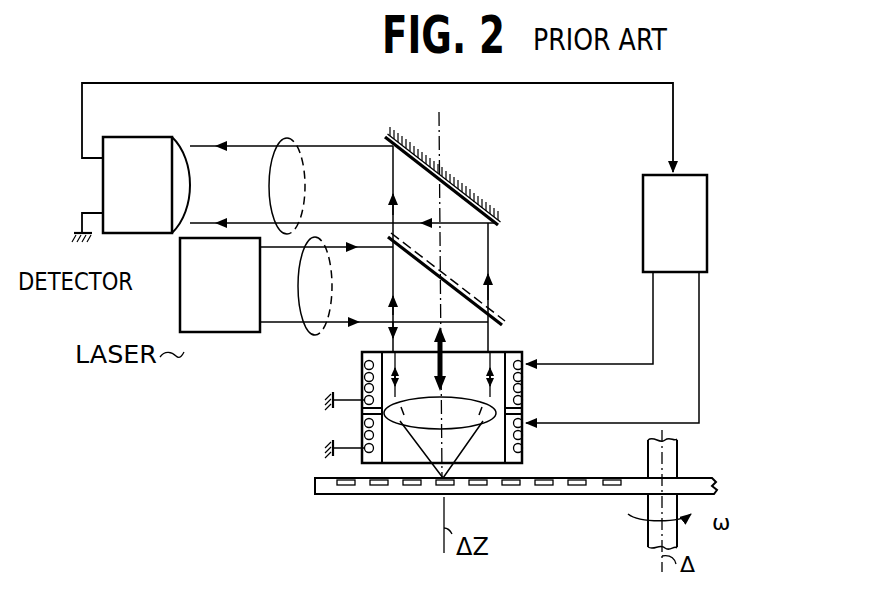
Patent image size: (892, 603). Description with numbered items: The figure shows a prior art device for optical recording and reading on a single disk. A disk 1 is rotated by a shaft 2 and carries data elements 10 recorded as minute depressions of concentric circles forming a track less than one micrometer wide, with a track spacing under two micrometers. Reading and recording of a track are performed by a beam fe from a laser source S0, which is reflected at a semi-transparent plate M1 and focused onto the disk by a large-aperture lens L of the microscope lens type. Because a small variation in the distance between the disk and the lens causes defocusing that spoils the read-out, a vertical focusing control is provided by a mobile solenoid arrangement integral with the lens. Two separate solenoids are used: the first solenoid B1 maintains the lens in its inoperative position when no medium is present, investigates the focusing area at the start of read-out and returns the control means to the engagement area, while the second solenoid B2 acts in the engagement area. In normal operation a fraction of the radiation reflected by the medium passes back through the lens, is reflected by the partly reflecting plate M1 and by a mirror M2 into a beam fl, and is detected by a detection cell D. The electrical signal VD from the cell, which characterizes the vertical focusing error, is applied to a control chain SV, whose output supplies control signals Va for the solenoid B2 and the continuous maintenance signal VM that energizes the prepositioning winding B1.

The disk 1 is at (548, 494).
The shaft 2 is at (669, 455).
The data elements 10 is at (441, 484).
The detection cell D is at (143, 233).
The laser source S0 is at (227, 333).
The beam fl is at (280, 147).
The beam fe is at (304, 334).
The semi-transparent plate M1 is at (505, 327).
The mirror M2 is at (500, 226).
The lens L is at (421, 430).
The first solenoid B1 is at (522, 440).
The second solenoid B2 is at (522, 390).
The control chain SV is at (725, 250).
The electrical signal VD is at (106, 84).
The control signals Va is at (610, 362).
The continuous signal VM is at (640, 416).